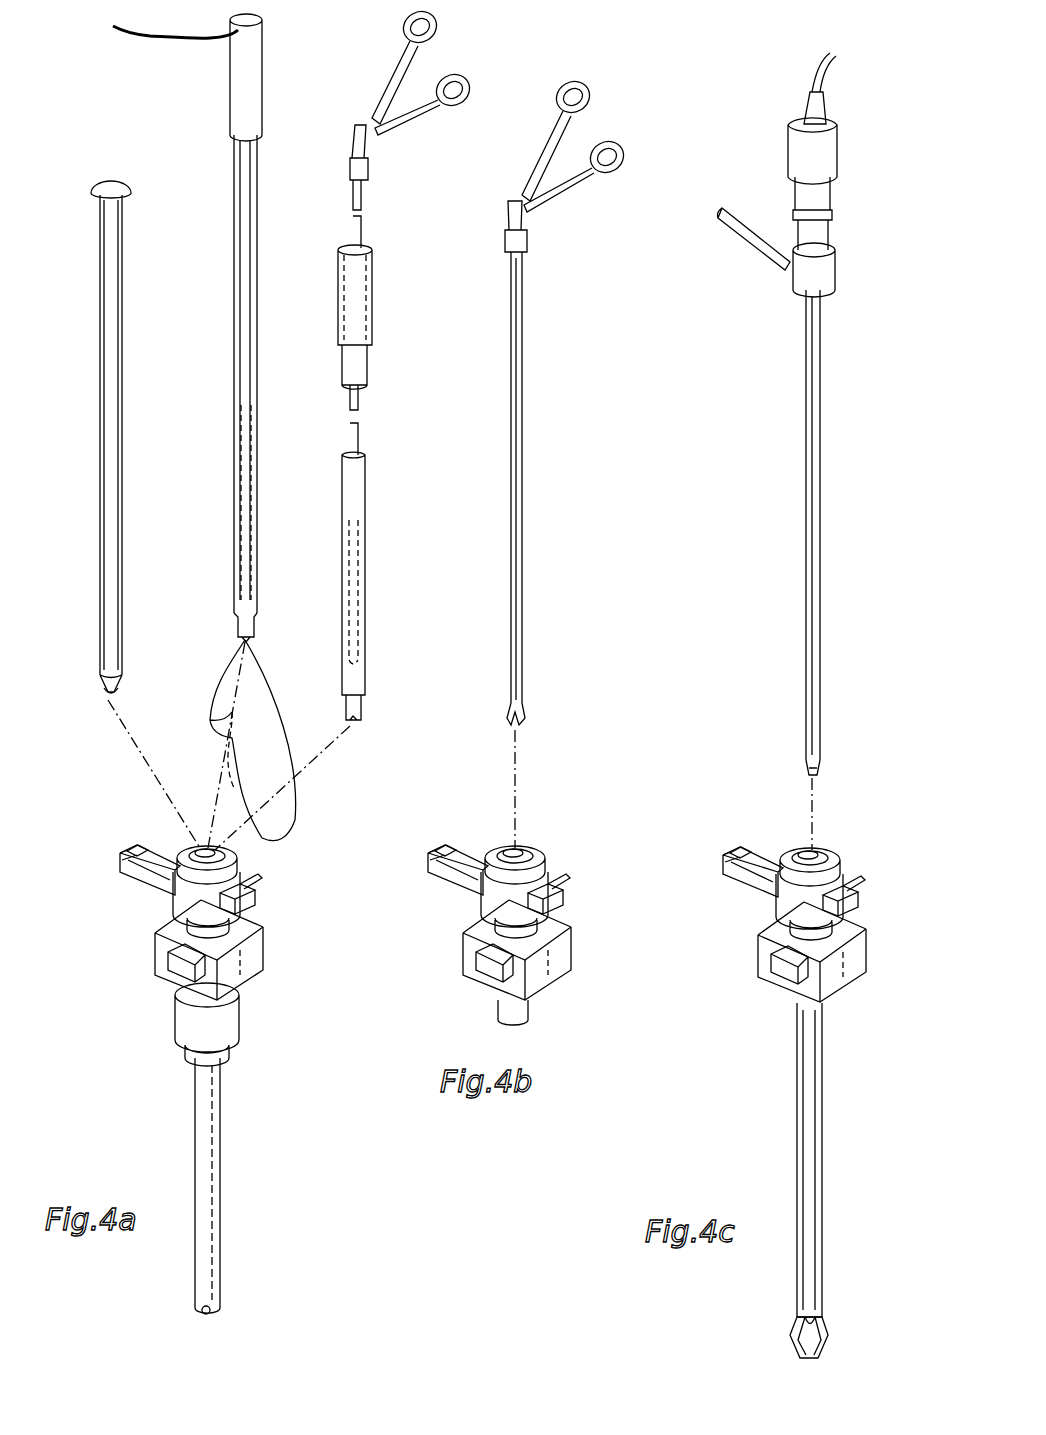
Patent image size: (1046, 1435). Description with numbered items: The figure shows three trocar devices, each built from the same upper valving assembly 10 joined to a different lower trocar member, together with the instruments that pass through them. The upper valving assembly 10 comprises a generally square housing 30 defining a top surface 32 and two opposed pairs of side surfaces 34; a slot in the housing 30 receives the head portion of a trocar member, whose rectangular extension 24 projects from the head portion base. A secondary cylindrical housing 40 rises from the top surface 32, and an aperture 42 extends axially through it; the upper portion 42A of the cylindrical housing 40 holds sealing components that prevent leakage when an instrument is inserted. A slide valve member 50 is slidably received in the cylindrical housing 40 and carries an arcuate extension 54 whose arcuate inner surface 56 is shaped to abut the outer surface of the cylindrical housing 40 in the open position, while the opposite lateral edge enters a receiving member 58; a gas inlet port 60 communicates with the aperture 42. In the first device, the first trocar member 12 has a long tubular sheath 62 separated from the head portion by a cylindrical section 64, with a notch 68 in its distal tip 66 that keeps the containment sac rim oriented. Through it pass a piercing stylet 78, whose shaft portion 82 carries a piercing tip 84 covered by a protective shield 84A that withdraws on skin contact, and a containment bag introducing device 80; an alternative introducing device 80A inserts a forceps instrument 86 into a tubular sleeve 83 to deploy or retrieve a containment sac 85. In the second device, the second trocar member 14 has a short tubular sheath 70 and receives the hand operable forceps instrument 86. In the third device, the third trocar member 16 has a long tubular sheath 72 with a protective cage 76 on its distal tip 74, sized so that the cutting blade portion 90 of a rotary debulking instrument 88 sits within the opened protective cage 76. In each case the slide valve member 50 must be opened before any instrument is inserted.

In FIG. 4A, the upper valving assembly 10 is at (210, 894).
In FIG. 4B, the upper valving assembly 10 is at (506, 893).
In FIG. 4C, the upper valving assembly 10 is at (789, 913).
In FIG. 4A, the first trocar member 12 is at (206, 1153).
In FIG. 4B, the second trocar member 14 is at (506, 915).
In FIG. 4C, the third trocar member 16 is at (789, 1070).
In FIG. 4A, the rectangular extension 24 is at (168, 962).
In FIG. 4B, the rectangular extension 24 is at (476, 963).
In FIG. 4C, the rectangular extension 24 is at (771, 965).
In FIG. 4A, the housing 30 is at (214, 954).
In FIG. 4B, the housing 30 is at (516, 954).
In FIG. 4C, the housing 30 is at (804, 970).
In FIG. 4A, the top surface 32 is at (246, 937).
In FIG. 4B, the top surface 32 is at (482, 926).
In FIG. 4C, the top surface 32 is at (850, 937).
In FIG. 4A, the side surfaces 34 is at (247, 975).
In FIG. 4B, the side surfaces 34 is at (552, 975).
In FIG. 4C, the side surfaces 34 is at (842, 987).
In FIG. 4A, the secondary cylindrical housing 40 is at (193, 913).
In FIG. 4B, the secondary cylindrical housing 40 is at (492, 902).
In FIG. 4C, the secondary cylindrical housing 40 is at (792, 906).
In FIG. 4A, the aperture 42 is at (205, 850).
In FIG. 4B, the aperture 42 is at (518, 852).
In FIG. 4C, the aperture 42 is at (815, 857).
In FIG. 4A, the upper portion of cylindrical housing 42A is at (192, 880).
In FIG. 4B, the upper portion of cylindrical housing 42A is at (532, 856).
In FIG. 4C, the upper portion of cylindrical housing 42A is at (832, 860).
In FIG. 4A, the slide valve member 50 is at (124, 849).
In FIG. 4B, the slide valve member 50 is at (438, 847).
In FIG. 4C, the slide valve member 50 is at (729, 849).
In FIG. 4A, the arcuate extension 54 is at (124, 852).
In FIG. 4B, the arcuate extension 54 is at (442, 851).
In FIG. 4C, the arcuate extension 54 is at (733, 856).
In FIG. 4A, the arcuate inner surface 56 is at (140, 847).
In FIG. 4B, the arcuate inner surface 56 is at (440, 855).
In FIG. 4C, the arcuate inner surface 56 is at (752, 853).
In FIG. 4A, the receiving member 58 is at (256, 899).
In FIG. 4B, the receiving member 58 is at (560, 903).
In FIG. 4C, the receiving member 58 is at (840, 901).
In FIG. 4A, the gas inlet port 60 is at (262, 875).
In FIG. 4B, the gas inlet port 60 is at (568, 879).
In FIG. 4C, the gas inlet port 60 is at (860, 883).
In FIG. 4A, the tubular sheath 62 is at (216, 1181).
In FIG. 4A, the cylindrical section 64 is at (233, 1027).
In FIG. 4A, the distal tip 66 is at (216, 1300).
In FIG. 4A, the notch 68 is at (204, 1313).
In FIG. 4B, the tubular sheath 70 is at (530, 1020).
In FIG. 4C, the tubular sheath 72 is at (806, 1181).
In FIG. 4C, the distal tip 74 is at (823, 1313).
In FIG. 4C, the protective cage 76 is at (800, 1341).
In FIG. 4A, the piercing stylet 78 is at (143, 443).
In FIG. 4A, the containment bag introducing device 80 is at (231, 223).
In FIG. 4A, the introducing device 80A is at (392, 571).
In FIG. 4A, the shaft portion 82 is at (124, 445).
In FIG. 4A, the tubular sleeve 83 is at (373, 366).
In FIG. 4A, the piercing tip 84 is at (118, 682).
In FIG. 4A, the protective shield 84A is at (122, 690).
In FIG. 4A, the containment sac 85 is at (370, 532).
In FIG. 4A, the forceps instrument 86 is at (362, 236).
In FIG. 4B, the forceps instrument 86 is at (532, 440).
In FIG. 4C, the rotary debulking instrument 88 is at (778, 414).
In FIG. 4C, the cutting blade portion 90 is at (806, 766).